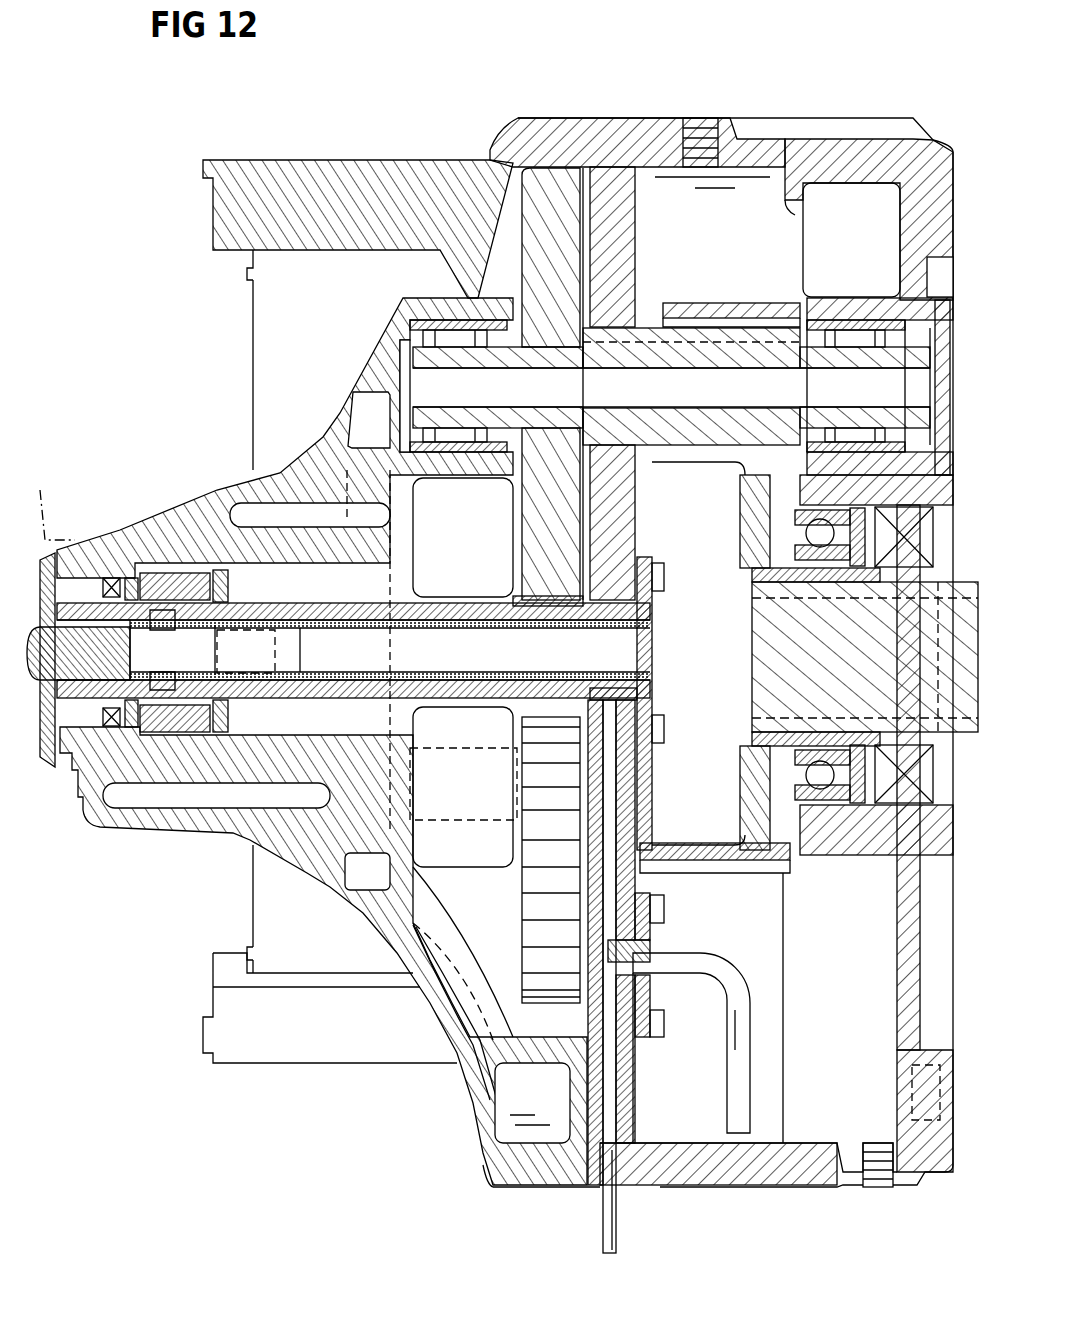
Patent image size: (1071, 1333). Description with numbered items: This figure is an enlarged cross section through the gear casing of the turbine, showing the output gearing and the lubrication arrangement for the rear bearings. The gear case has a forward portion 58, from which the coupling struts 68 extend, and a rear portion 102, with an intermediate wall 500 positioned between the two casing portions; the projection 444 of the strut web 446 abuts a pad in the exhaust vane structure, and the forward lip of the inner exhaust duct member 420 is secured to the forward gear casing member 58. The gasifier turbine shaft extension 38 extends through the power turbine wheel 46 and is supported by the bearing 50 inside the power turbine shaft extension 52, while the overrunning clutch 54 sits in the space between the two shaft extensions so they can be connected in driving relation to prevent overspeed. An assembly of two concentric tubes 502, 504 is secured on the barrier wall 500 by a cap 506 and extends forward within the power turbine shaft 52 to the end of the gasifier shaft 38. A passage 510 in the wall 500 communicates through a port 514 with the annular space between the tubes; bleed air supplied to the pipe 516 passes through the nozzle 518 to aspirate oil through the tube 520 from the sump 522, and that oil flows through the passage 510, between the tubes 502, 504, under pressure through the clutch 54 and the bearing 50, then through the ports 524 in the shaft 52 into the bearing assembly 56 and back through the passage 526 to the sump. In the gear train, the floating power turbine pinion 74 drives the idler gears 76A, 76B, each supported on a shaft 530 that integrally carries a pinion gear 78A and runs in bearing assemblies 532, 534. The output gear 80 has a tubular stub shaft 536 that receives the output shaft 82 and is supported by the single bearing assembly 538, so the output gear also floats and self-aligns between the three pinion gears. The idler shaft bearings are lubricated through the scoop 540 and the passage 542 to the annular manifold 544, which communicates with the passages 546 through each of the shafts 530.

The gasifier turbine shaft extension 38 is at (57, 662).
The power turbine wheel 46 is at (36, 640).
The bearing 50 is at (185, 635).
The power turbine shaft extension 52 is at (422, 605).
The overrunning clutch 54 is at (245, 630).
The bearing assembly 56 is at (180, 588).
The forward gear casing member 58 is at (568, 140).
The coupling strut 68 is at (325, 160).
The power turbine pinion 74 is at (510, 598).
The idler gear 76A is at (528, 290).
The idler gear 76B is at (525, 933).
The pinion gear 78A is at (650, 300).
The output gear 80 is at (720, 862).
The output shaft 82 is at (770, 648).
The rear gear casing portion 102 is at (795, 140).
The inner exhaust duct member 420 is at (50, 500).
The projection 444 is at (243, 273).
The strut web 446 is at (262, 334).
The intermediate wall 500 is at (635, 233).
The concentric tube 502 is at (440, 630).
The concentric tube 504 is at (518, 630).
The cap 506 is at (652, 608).
The passage 510 is at (613, 793).
The port 514 is at (637, 695).
The pipe 516 is at (605, 1218).
The nozzle 518 is at (640, 950).
The tube 520 is at (740, 970).
The sump 522 is at (700, 1093).
The ports 524 is at (163, 615).
The passage 526 is at (120, 723).
The idler shaft 530 is at (452, 345).
The bearing assembly 532 is at (450, 330).
The bearing assembly 534 is at (862, 338).
The tubular stub shaft 536 is at (890, 730).
The bearing assembly 538 is at (795, 527).
The scoop 540 is at (498, 1105).
The passage 542 is at (447, 982).
The annular manifold 544 is at (350, 420).
The passage 546 is at (590, 396).